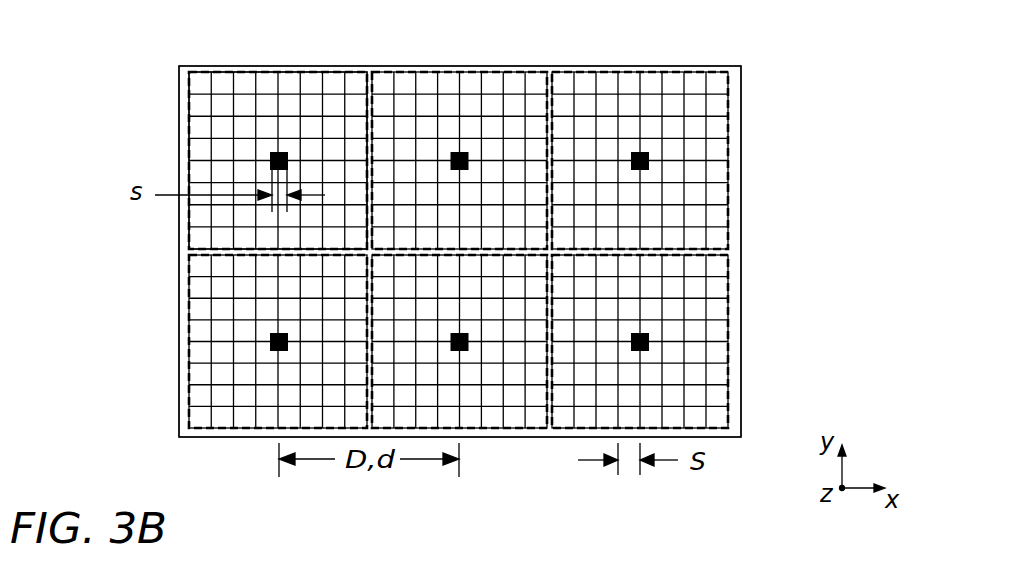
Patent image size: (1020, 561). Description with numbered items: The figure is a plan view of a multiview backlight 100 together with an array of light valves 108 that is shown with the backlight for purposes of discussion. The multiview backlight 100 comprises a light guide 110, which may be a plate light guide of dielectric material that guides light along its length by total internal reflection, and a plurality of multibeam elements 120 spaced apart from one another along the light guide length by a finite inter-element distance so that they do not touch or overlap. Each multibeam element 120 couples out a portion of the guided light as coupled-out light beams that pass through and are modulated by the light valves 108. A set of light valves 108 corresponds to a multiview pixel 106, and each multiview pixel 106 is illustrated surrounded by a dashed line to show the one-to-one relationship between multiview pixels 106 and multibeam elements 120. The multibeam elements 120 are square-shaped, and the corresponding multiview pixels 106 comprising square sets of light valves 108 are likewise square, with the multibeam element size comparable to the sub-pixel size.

The multiview backlight 100 is at (750, 62).
The multiview pixel 106 is at (368, 62).
The light valve 108 is at (495, 82).
The light guide 110 is at (740, 251).
The multibeam element 120 is at (270, 161).